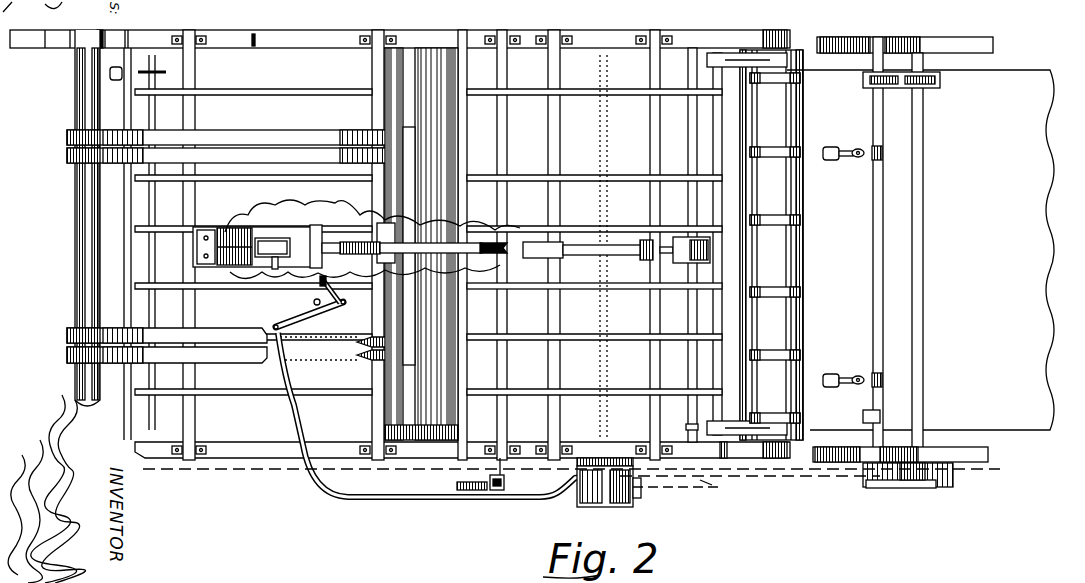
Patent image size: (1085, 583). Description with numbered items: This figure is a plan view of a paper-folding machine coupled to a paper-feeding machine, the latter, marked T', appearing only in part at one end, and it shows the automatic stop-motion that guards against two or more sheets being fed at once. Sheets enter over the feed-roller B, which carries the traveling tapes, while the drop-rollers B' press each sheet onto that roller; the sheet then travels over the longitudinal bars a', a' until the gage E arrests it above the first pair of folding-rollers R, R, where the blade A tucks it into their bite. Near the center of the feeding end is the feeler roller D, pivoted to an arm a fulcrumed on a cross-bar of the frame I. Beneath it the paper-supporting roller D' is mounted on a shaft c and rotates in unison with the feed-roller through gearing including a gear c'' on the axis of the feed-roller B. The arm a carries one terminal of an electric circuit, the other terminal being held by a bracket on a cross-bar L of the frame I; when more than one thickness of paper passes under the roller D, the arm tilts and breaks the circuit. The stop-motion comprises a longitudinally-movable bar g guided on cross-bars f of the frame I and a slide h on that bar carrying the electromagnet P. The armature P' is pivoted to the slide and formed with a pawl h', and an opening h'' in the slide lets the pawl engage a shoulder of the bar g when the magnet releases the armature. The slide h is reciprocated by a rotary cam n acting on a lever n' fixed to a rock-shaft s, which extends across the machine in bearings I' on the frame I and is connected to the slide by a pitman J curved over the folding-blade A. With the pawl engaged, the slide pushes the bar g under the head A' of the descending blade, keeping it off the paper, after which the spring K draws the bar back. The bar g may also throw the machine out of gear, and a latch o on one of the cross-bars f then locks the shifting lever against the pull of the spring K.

The frame I is at (400, 233).
The bearings I' is at (445, 231).
The gage E is at (170, 321).
The cross-bar L is at (578, 328).
The cross-bars f is at (212, 321).
The folding-rollers R is at (395, 244).
The spring K is at (436, 244).
The folding-blade A is at (421, 246).
The head of blade A' is at (391, 272).
The electromagnet P is at (253, 230).
The armature P' is at (226, 228).
The slide h is at (277, 228).
The pawl h' is at (248, 234).
The opening h'' is at (266, 284).
The pitman J is at (440, 245).
The longitudinally-movable bar g is at (352, 241).
The rock-shaft s is at (503, 366).
The longitudinal bars a' is at (538, 215).
The arm a is at (608, 260).
The feeler roller D is at (685, 231).
The paper-supporting roller D' is at (701, 228).
The latch o is at (309, 302).
The rotary cam n is at (429, 432).
The lever n' is at (511, 476).
The feed-roller B is at (766, 245).
The drop-rollers B' is at (760, 248).
The table T' is at (920, 262).
The shaft c is at (681, 427).
The gear c'' is at (719, 488).